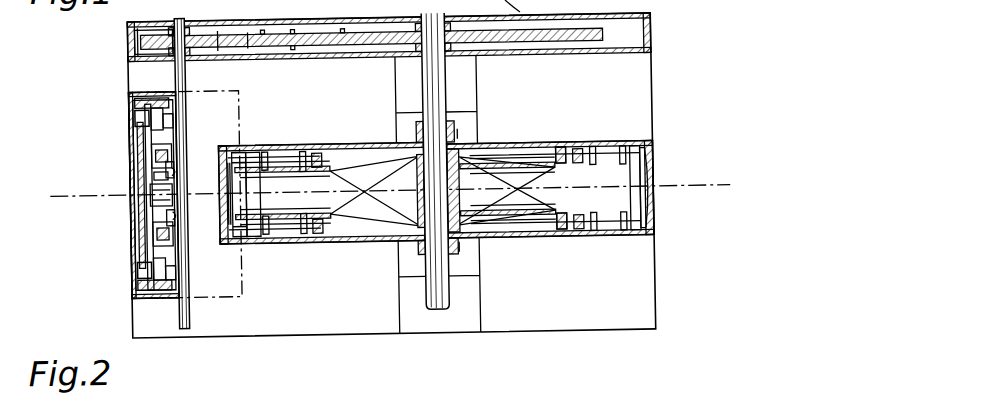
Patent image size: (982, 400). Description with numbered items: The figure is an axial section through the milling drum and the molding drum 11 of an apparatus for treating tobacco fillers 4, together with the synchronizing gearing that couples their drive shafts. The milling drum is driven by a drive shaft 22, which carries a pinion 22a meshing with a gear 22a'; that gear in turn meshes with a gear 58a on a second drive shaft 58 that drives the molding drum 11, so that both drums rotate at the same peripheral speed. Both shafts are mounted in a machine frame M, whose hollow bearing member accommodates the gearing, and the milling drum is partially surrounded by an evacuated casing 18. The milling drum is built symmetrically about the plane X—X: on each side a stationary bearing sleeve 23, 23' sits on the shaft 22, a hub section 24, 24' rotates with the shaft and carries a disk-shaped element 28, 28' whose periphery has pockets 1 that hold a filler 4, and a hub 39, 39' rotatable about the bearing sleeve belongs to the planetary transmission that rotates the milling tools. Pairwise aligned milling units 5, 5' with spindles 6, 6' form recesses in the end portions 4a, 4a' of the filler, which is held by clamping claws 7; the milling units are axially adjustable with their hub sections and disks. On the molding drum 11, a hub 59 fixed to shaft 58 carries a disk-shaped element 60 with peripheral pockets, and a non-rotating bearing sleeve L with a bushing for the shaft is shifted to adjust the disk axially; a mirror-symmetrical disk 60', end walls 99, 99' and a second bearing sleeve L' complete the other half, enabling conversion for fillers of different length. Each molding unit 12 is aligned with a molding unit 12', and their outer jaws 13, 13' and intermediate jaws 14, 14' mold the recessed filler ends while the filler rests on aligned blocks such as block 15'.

The pockets 1 is at (150, 218).
The filler 4 is at (150, 208).
The end portion 4a is at (130, 241).
The other end portion 4a' is at (125, 161).
The milling unit 5 is at (118, 266).
The second milling unit 5' is at (112, 124).
The spindle 6 is at (126, 276).
The second spindle 6' is at (120, 133).
The clamping elements or claws 7 is at (150, 172).
The molding drum 11 is at (367, 236).
The molding unit 12 is at (460, 214).
The second molding unit 12' is at (452, 174).
The outer jaws 13 is at (259, 223).
The second outer jaws 13' is at (257, 157).
The intermediate jaw 14 is at (237, 212).
The second intermediate jaw 14' is at (250, 174).
The block 15' is at (659, 187).
The casing 18 is at (130, 289).
The drive shaft 22 is at (183, 327).
The pinion 22a is at (114, 43).
The gear 22a' is at (387, 54).
The bearing sleeve 23 is at (205, 293).
The second bearing sleeve 23' is at (187, 124).
The hub section 24 is at (193, 233).
The second hub section 24' is at (193, 170).
The disk-shaped element 28 is at (122, 201).
The second disk-shaped element 28' is at (187, 192).
The hub 39 is at (178, 285).
The second hub 39' is at (173, 107).
The second drive shaft 58 is at (447, 101).
The gear 58a is at (549, 46).
The hub 59 is at (462, 160).
The disk-shaped element 60 is at (553, 238).
The second disk-shaped element 60' is at (542, 140).
The end wall 99 is at (447, 208).
The second end wall 99' is at (555, 175).
The bearing sleeve L is at (508, 224).
The second bearing sleeve L' is at (481, 174).
The machine frame M is at (663, 81).
The symmetry plane X is at (388, 190).